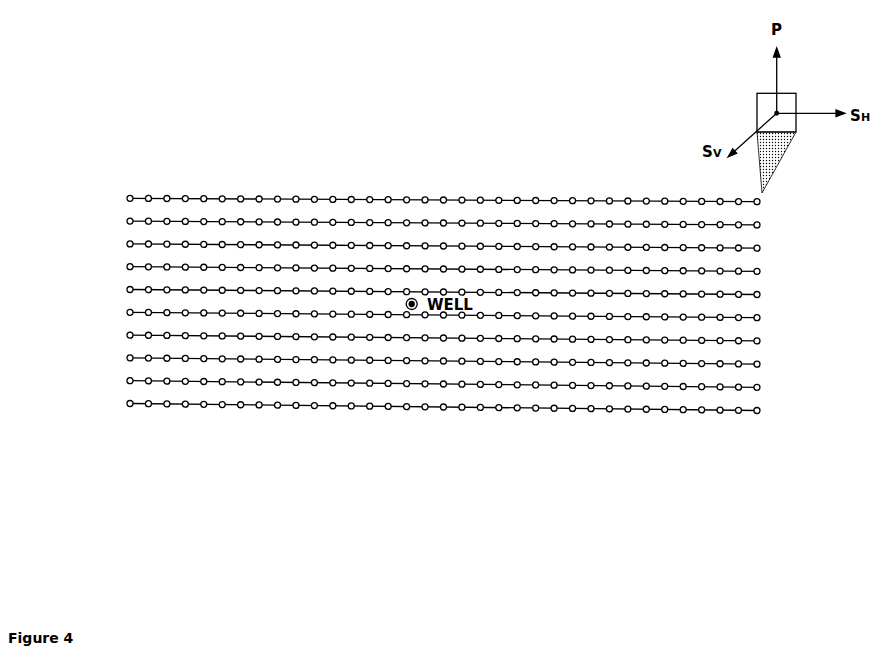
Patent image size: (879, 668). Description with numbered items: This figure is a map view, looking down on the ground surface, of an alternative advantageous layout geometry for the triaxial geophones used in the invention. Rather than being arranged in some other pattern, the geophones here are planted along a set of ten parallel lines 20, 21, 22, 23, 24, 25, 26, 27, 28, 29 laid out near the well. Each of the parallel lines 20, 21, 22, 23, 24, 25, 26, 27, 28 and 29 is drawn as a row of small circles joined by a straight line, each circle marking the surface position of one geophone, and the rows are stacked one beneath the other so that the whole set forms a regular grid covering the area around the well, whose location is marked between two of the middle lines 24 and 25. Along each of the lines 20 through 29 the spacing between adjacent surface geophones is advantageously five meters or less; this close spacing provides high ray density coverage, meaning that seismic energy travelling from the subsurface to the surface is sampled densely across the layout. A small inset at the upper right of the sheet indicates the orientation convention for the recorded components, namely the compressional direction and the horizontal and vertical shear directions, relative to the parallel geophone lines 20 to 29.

The parallel line 20 is at (456, 203).
The parallel line 21 is at (456, 226).
The parallel line 22 is at (456, 249).
The parallel line 23 is at (456, 272).
The parallel line 24 is at (456, 294).
The parallel line 25 is at (456, 317).
The parallel line 26 is at (456, 341).
The parallel line 27 is at (456, 364).
The parallel line 28 is at (456, 387).
The parallel line 29 is at (456, 409).